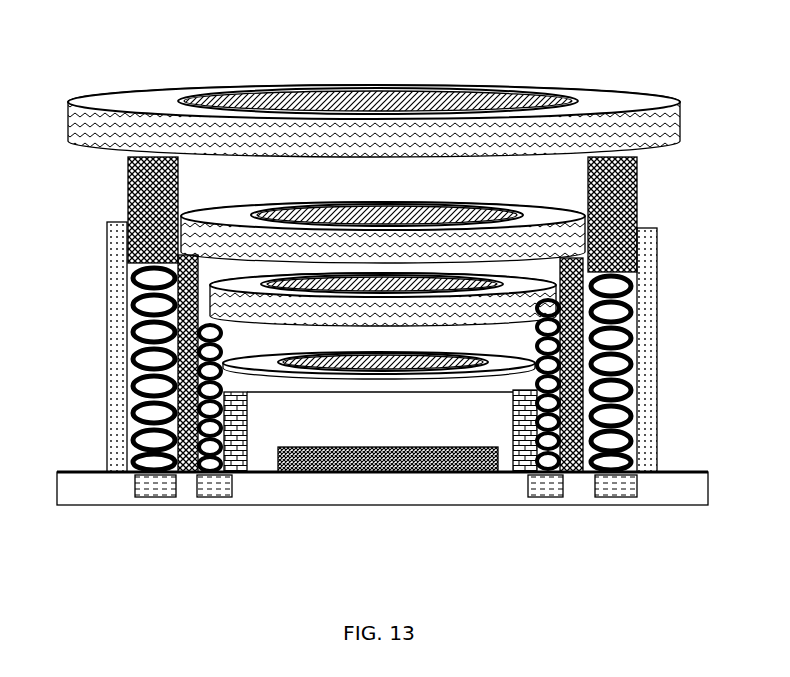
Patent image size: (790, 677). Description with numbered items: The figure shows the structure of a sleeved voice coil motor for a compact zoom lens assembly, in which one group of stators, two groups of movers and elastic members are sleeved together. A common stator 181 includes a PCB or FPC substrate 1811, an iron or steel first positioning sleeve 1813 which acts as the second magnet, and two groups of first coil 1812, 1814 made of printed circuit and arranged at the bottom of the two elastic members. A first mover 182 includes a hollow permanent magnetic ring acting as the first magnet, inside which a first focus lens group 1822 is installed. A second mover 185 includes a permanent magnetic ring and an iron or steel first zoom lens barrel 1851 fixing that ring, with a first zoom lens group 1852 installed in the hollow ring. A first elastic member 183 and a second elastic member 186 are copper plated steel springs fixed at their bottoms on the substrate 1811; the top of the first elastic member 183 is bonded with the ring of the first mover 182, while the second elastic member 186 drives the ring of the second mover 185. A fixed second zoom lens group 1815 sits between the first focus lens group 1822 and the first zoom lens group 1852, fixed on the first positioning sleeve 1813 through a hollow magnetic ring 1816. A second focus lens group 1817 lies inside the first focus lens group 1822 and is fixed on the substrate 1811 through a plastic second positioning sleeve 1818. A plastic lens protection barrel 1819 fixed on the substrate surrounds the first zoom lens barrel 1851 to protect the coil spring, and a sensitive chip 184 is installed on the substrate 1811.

The common stator 181 is at (188, 473).
The substrate 1811 is at (485, 497).
The first coil 1812 is at (545, 490).
The first positioning sleeve 1813 is at (200, 503).
The first coil 1814 is at (623, 488).
The second zoom lens group 1815 is at (481, 205).
The hollow magnetic ring 1816 is at (543, 218).
The second focus lens group 1817 is at (410, 377).
The second positioning sleeve 1818 is at (250, 440).
The lens protection barrel 1819 is at (118, 460).
The first mover 182 is at (360, 217).
The first focus lens group 1822 is at (350, 298).
The first elastic member 183 is at (130, 330).
The sensitive chip 184 is at (375, 475).
The second mover 185 is at (168, 97).
The first zoom lens barrel 1851 is at (139, 158).
The first zoom lens group 1852 is at (355, 97).
The second elastic member 186 is at (157, 450).